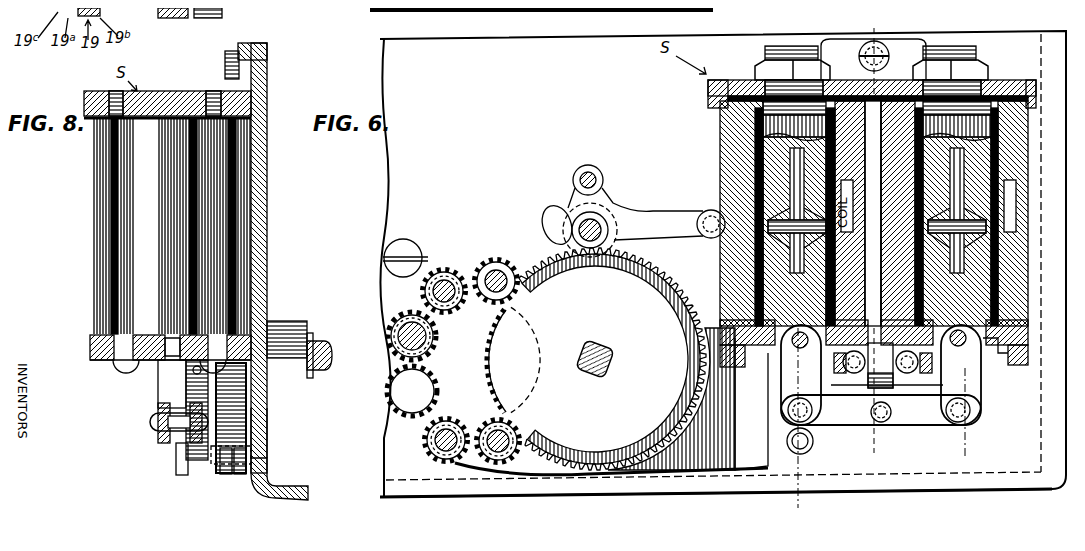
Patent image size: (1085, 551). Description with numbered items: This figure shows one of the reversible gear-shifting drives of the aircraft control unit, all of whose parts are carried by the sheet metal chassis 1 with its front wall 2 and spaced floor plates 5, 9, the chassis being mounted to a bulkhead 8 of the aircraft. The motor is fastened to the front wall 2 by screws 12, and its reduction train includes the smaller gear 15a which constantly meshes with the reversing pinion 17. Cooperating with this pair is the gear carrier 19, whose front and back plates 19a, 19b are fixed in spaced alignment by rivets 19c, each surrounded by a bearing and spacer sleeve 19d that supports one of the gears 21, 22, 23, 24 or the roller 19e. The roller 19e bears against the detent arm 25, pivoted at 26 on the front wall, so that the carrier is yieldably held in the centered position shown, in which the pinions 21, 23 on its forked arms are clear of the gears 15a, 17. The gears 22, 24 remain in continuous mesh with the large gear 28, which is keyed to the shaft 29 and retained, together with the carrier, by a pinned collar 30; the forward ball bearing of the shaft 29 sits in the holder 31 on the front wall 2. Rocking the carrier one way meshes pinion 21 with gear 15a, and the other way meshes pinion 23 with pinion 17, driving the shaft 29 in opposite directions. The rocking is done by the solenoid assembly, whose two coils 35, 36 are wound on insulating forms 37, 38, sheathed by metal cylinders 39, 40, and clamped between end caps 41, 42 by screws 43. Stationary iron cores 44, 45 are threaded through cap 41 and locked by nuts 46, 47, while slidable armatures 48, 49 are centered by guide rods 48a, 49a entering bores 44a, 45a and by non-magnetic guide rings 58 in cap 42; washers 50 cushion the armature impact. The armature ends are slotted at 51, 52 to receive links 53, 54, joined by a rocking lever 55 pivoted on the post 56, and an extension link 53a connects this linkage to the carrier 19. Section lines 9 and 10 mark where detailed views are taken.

In FIG. 8, the frame or chassis 1 is at (269, 182).
In FIG. 6, the frame or chassis 1 is at (366, 62).
In FIG. 8, the front wall 2 is at (262, 205).
In FIG. 6, the front wall 2 is at (380, 82).
In FIG. 8, the floor plate 5 is at (300, 488).
In FIG. 6, the floor plate 5 is at (575, 473).
In FIG. 6, the transverse bulkhead 8 is at (863, 451).
In FIG. 6, the floor plate 9 is at (770, 493).
In FIG. 6, the section line 10- 10 is at (940, 447).
In FIG. 6, the screws 12 is at (393, 237).
In FIG. 6, the smaller gear 15a is at (395, 305).
In FIG. 6, the reversing pinion 17 is at (390, 398).
In FIG. 8, the gear carrier 19 is at (165, 437).
In FIG. 6, the gear carrier 19 is at (647, 473).
In FIG. 8, the front plate 19a is at (216, 467).
In FIG. 6, the front plate 19a is at (742, 448).
In FIG. 8, the back plate 19b is at (235, 467).
In FIG. 6, the back plate 19b is at (700, 464).
In FIG. 8, the rivets 19c is at (265, 446).
In FIG. 6, the rivets 19c is at (440, 447).
In FIG. 6, the bearing and spacer sleeve 19d is at (488, 446).
In FIG. 6, the roller 19e is at (562, 222).
In FIG. 6, the pinion 21 is at (430, 262).
In FIG. 6, the gear 22 is at (491, 250).
In FIG. 6, the pinion 23 is at (432, 454).
In FIG. 6, the gear 24 is at (496, 457).
In FIG. 6, the detent arm 25 is at (668, 215).
In FIG. 6, the pivot 26 is at (700, 218).
In FIG. 8, the large gear 28 is at (265, 410).
In FIG. 8, the shaft 29 is at (312, 343).
In FIG. 6, the shaft 29 is at (598, 366).
In FIG. 8, the pinned collar 30 is at (180, 388).
In FIG. 8, the ball bearing holder 31 is at (293, 315).
In FIG. 6, the solenoid coil 35 is at (715, 100).
In FIG. 6, the solenoid coil 36 is at (1000, 115).
In FIG. 6, the cylindrical form 37 is at (748, 118).
In FIG. 6, the cylindrical form 38 is at (985, 135).
In FIG. 8, the metal cylinder 39 is at (95, 207).
In FIG. 6, the metal cylinder 39 is at (760, 160).
In FIG. 6, the metal cylinder 40 is at (1005, 190).
In FIG. 8, the end cap 41 is at (85, 90).
In FIG. 6, the end cap 41 is at (705, 80).
In FIG. 8, the end cap 42 is at (82, 330).
In FIG. 6, the end cap 42 is at (996, 336).
In FIG. 8, the screws 43 is at (200, 176).
In FIG. 6, the stationary core portion 44 is at (760, 178).
In FIG. 6, the central bore 44a is at (760, 130).
In FIG. 6, the stationary core portion 45 is at (995, 73).
In FIG. 6, the central bore 45a is at (952, 153).
In FIG. 6, the nut 46 is at (753, 52).
In FIG. 6, the nut 47 is at (975, 52).
In FIG. 6, the armature portion 48 is at (722, 283).
In FIG. 6, the central guide rod 48a is at (780, 255).
In FIG. 6, the armature portion 49 is at (995, 345).
In FIG. 6, the central guide rod 49a is at (952, 240).
In FIG. 6, the non-magnetic washers 50 is at (955, 220).
In FIG. 6, the slot 51 is at (722, 310).
In FIG. 6, the slot 52 is at (975, 368).
In FIG. 6, the link 53 is at (782, 367).
In FIG. 8, the extension link 53a is at (175, 467).
In FIG. 6, the extension link 53a is at (778, 432).
In FIG. 6, the link 54 is at (965, 380).
In FIG. 8, the rocking lever 55 is at (150, 408).
In FIG. 6, the rocking lever 55 is at (832, 418).
In FIG. 8, the post 56 is at (155, 368).
In FIG. 6, the post 56 is at (880, 362).
In FIG. 6, the guide rings 58 is at (768, 342).